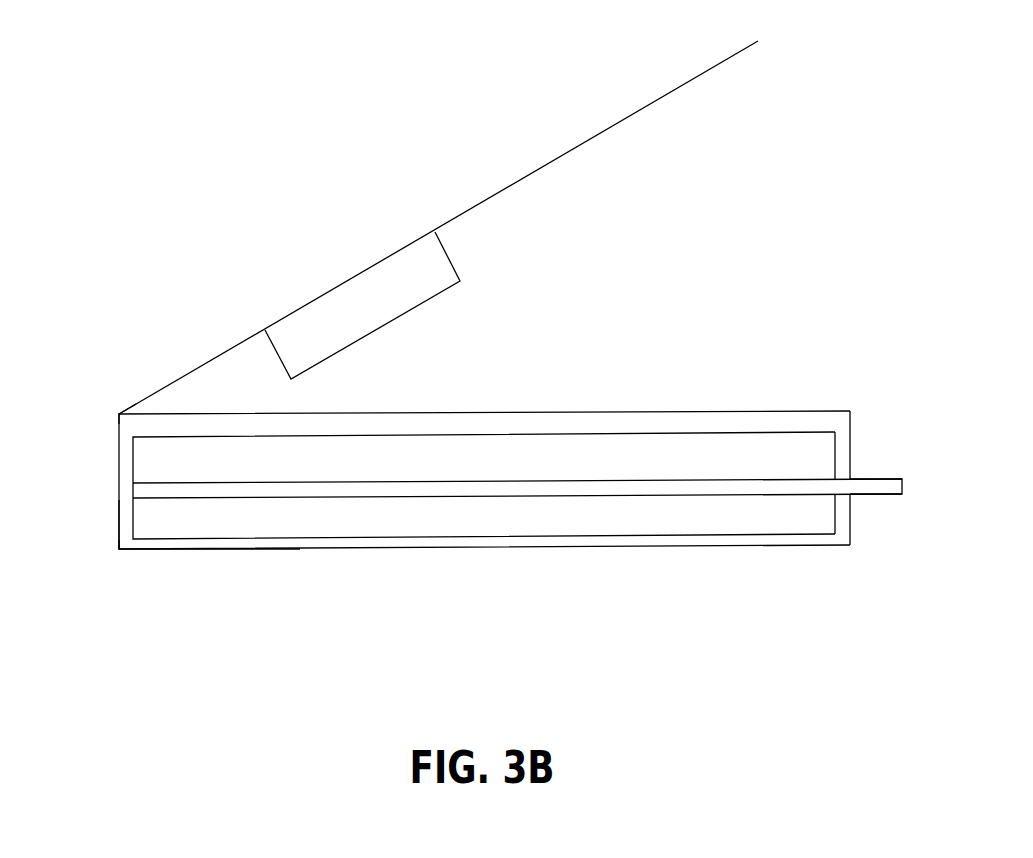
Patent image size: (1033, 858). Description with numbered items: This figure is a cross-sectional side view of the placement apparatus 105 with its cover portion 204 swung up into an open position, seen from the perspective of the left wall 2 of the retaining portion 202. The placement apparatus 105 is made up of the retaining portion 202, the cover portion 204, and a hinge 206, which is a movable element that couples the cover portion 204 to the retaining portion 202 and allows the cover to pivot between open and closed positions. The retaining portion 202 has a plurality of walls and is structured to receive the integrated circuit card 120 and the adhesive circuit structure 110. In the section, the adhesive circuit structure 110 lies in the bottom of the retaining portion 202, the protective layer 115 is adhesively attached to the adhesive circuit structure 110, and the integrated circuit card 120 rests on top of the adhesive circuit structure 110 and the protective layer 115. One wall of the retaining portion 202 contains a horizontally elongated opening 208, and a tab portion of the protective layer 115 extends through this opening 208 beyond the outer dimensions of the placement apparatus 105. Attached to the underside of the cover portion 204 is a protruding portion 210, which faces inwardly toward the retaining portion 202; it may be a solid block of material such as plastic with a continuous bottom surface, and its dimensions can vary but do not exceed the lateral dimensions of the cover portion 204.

The placement apparatus 105 is at (212, 736).
The adhesive circuit structure 110 is at (754, 538).
The protective layer 115 is at (577, 491).
The integrated circuit card 120 is at (711, 422).
The left wall 2 is at (255, 546).
The retaining portion 202 is at (114, 531).
The cover portion 204 is at (507, 182).
The hinge 206 is at (114, 409).
The opening 208 is at (854, 477).
The protruding portion 210 is at (455, 255).